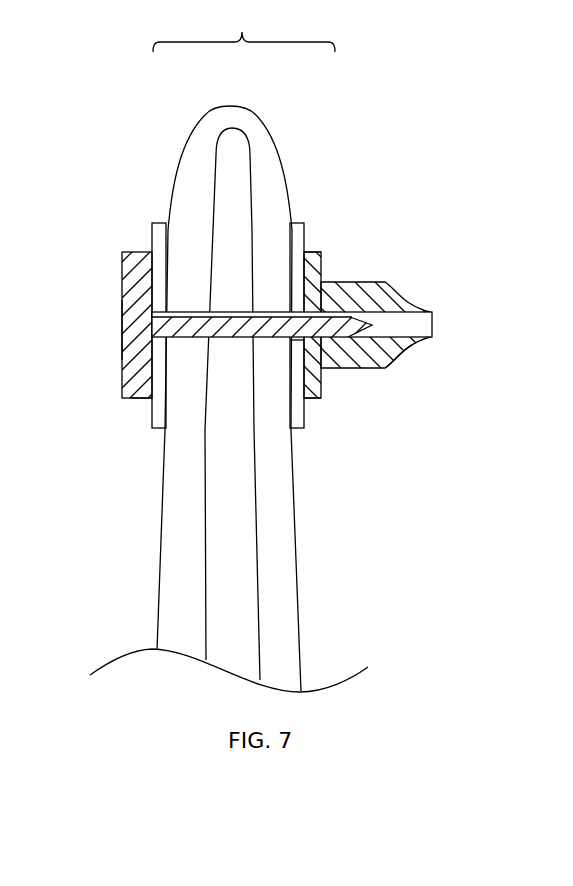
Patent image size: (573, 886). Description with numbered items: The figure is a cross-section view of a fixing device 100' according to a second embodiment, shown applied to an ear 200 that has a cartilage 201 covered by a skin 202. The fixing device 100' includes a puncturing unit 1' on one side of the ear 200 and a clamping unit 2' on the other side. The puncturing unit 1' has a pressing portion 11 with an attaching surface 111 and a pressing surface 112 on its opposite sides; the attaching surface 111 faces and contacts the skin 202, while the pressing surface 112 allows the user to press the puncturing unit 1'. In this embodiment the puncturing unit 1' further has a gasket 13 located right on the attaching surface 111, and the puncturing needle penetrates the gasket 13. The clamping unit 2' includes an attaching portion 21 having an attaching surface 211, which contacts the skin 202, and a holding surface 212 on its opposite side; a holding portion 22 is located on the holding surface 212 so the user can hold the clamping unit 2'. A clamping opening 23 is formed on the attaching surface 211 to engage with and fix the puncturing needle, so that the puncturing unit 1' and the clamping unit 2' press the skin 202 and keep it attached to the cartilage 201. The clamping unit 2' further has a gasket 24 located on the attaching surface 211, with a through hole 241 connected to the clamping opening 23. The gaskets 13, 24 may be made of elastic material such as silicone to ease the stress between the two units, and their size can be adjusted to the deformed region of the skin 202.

The fixing device 100' is at (244, 30).
The puncturing unit 1' is at (110, 251).
The clamping unit 2' is at (326, 276).
The pressing portion 11 is at (133, 251).
The pressing surface 112 is at (122, 345).
The attaching surface 111 is at (152, 381).
The gasket 13 is at (157, 418).
The gasket 24 is at (297, 228).
The through hole 241 is at (297, 333).
The attaching portion 21 is at (313, 386).
The holding surface 212 is at (322, 259).
The attaching surface 211 is at (300, 395).
The holding portion 22 is at (393, 300).
The clamping opening 23 is at (392, 337).
The ear 200 is at (246, 399).
The skin 202 is at (285, 538).
The cartilage 201 is at (240, 570).